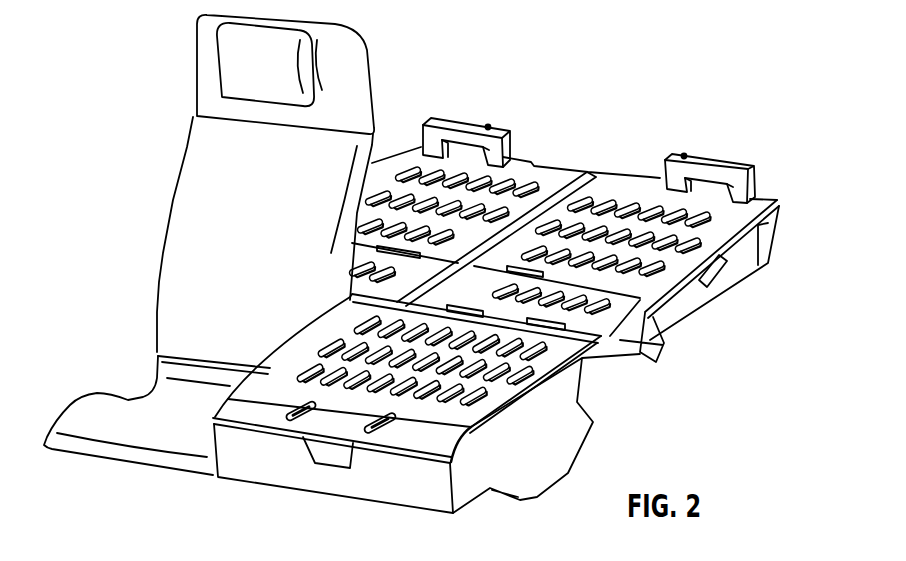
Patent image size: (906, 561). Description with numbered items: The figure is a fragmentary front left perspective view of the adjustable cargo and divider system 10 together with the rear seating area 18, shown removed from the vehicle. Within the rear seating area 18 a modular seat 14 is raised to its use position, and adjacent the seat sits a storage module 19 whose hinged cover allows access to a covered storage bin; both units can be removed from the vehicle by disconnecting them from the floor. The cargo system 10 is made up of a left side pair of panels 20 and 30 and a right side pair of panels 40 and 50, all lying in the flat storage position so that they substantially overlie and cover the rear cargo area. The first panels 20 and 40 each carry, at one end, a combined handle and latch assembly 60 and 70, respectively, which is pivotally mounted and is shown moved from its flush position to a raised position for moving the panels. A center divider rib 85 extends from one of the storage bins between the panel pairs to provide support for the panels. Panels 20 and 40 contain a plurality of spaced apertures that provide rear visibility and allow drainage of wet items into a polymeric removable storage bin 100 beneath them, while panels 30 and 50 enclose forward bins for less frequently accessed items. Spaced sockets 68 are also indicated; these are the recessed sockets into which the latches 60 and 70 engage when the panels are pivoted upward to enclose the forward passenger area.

The adjustable cargo and divider system 10 is at (552, 128).
The modular seat 14 is at (162, 240).
The rear seating area 18 is at (112, 105).
The storage module 19 is at (586, 402).
The first panel 20 is at (762, 200).
The second panel 30 is at (652, 356).
The first panel 40 is at (397, 156).
The second panel 50 is at (358, 268).
The combined handle and latch assembly 60 is at (715, 166).
The spaced sockets 68 is at (370, 422).
The combined handle and latch assembly 70 is at (462, 127).
The center divider rib 85 is at (587, 171).
The removable storage bin 100 is at (700, 318).